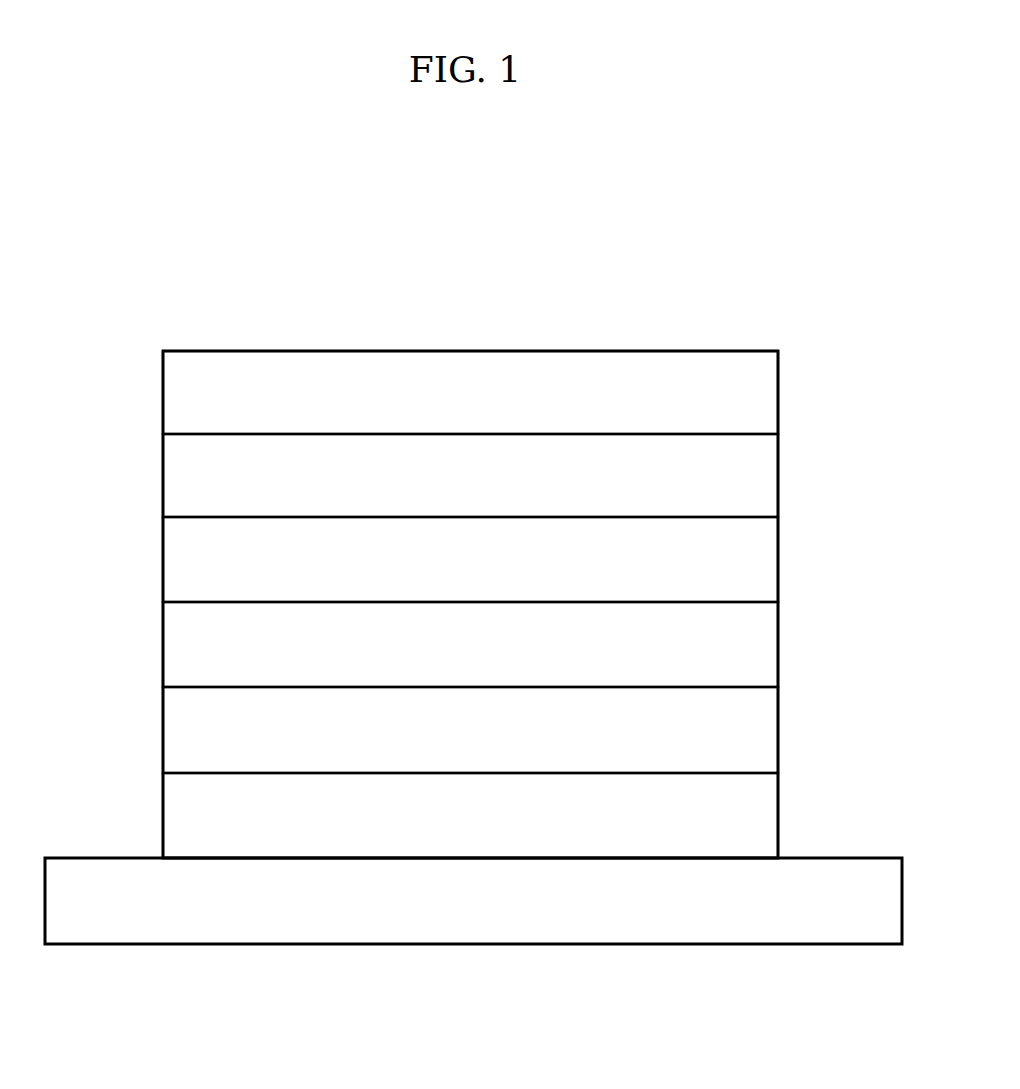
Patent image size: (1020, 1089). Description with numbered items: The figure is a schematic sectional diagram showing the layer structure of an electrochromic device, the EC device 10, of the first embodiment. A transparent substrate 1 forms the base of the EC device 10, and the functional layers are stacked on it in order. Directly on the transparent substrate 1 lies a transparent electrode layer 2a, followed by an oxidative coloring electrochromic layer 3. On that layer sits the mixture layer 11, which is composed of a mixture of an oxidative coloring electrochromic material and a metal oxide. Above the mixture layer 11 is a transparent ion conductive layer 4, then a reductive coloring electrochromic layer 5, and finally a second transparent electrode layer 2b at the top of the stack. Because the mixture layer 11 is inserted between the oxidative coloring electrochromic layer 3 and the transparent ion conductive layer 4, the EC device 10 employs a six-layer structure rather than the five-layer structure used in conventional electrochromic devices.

The transparent substrate 1 is at (806, 905).
The EC device 10 is at (574, 312).
The transparent electrode layer 2a is at (198, 816).
The oxidative coloring electrochromic layer 3 is at (198, 730).
The mixture layer 11 is at (198, 644).
The transparent ion conductive layer 4 is at (198, 565).
The reductive coloring electrochromic layer 5 is at (198, 482).
The transparent electrode layer 2b is at (198, 397).